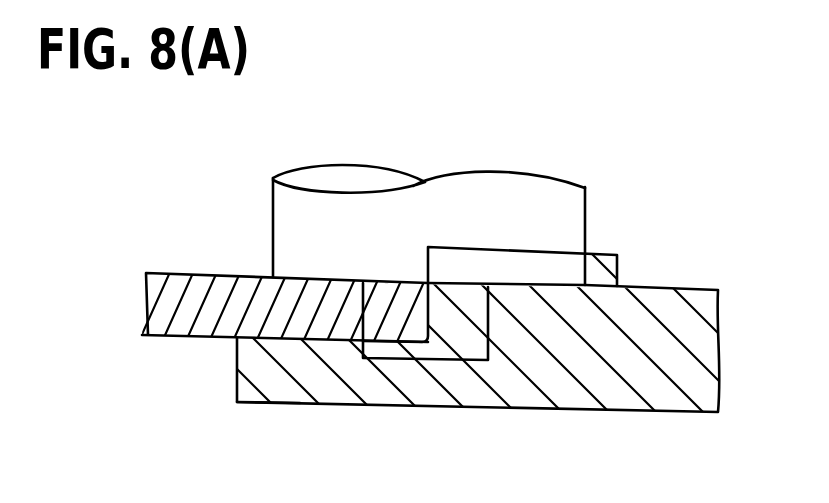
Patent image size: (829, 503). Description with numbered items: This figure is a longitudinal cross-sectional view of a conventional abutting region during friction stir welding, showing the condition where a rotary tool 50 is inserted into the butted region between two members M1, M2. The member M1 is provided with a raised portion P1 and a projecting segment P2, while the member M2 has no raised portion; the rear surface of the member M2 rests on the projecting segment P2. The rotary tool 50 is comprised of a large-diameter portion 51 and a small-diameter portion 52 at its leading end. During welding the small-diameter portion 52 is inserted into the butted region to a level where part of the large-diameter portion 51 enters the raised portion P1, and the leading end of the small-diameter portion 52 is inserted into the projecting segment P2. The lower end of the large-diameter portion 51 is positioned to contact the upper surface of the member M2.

The rotary tool 50 is at (256, 164).
The large-diameter portion 51 is at (285, 221).
The small-diameter portion 52 is at (398, 362).
The raised portion P1 is at (602, 258).
The projecting segment P2 is at (262, 392).
The member M1 is at (577, 400).
The member M2 is at (162, 340).